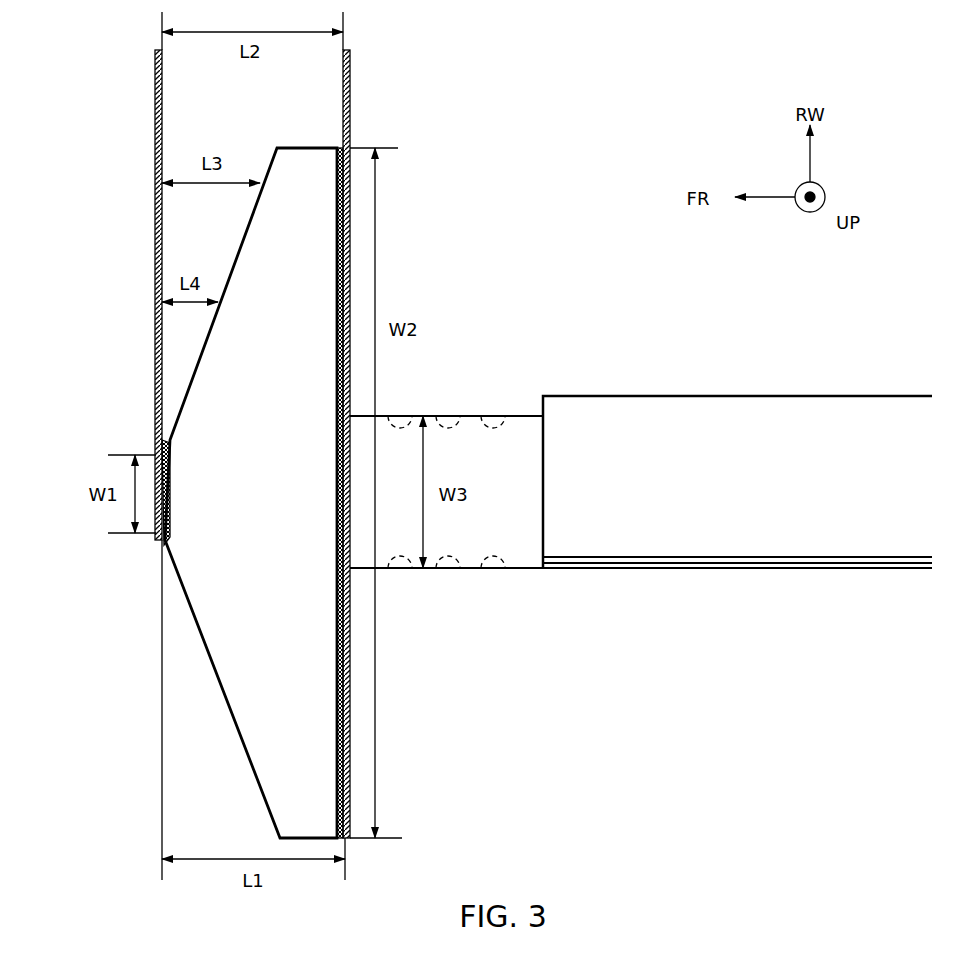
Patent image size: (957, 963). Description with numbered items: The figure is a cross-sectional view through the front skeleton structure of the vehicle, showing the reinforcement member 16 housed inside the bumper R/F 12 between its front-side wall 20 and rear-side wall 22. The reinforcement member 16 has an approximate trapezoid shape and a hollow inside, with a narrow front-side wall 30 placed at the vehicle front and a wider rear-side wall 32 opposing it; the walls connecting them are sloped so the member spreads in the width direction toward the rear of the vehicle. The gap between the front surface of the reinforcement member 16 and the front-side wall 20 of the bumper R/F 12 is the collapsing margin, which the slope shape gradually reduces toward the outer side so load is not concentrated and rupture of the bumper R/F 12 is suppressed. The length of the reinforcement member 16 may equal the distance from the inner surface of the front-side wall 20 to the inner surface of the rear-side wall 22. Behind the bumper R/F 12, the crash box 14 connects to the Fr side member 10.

The Fr side member 10 is at (615, 396).
The bumper R/F 12 is at (153, 128).
The crash box 14 is at (470, 416).
The reinforcement member 16 is at (217, 681).
The front-side wall 20 is at (155, 272).
The rear-side wall 22 is at (350, 90).
The front-side wall 30 is at (170, 493).
The rear-side wall 32 is at (337, 468).